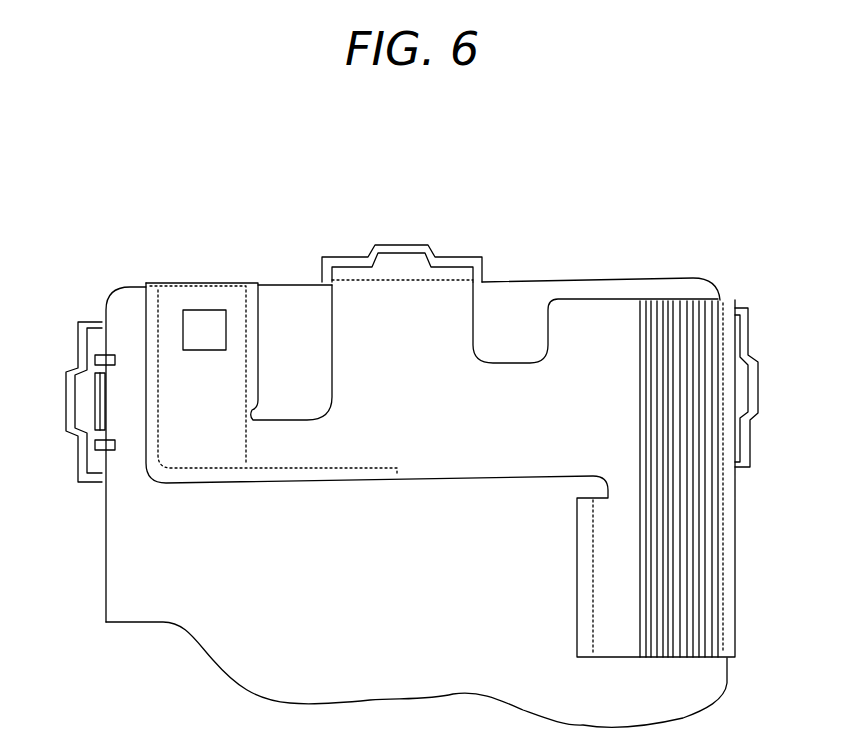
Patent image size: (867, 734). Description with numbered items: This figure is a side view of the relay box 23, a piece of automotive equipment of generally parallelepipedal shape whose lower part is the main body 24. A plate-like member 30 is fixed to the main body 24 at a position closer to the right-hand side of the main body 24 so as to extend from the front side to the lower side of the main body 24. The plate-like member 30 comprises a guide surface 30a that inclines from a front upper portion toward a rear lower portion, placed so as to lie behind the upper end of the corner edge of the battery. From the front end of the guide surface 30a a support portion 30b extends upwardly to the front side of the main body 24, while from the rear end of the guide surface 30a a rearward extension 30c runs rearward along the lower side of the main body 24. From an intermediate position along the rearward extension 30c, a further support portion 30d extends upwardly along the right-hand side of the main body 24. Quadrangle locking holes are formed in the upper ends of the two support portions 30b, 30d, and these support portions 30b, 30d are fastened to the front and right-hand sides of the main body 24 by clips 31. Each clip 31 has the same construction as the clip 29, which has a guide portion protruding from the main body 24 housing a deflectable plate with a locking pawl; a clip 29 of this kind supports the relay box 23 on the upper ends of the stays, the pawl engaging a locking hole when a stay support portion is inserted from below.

The relay box 23 is at (660, 274).
The main body 24 is at (559, 278).
The clip 29 is at (72, 327).
The plate-like member 30 is at (442, 481).
The guide surface 30a is at (708, 592).
The support portion 30b is at (751, 438).
The rearward extension 30c is at (252, 458).
The support portion 30d is at (382, 273).
The clip 31 is at (447, 241).